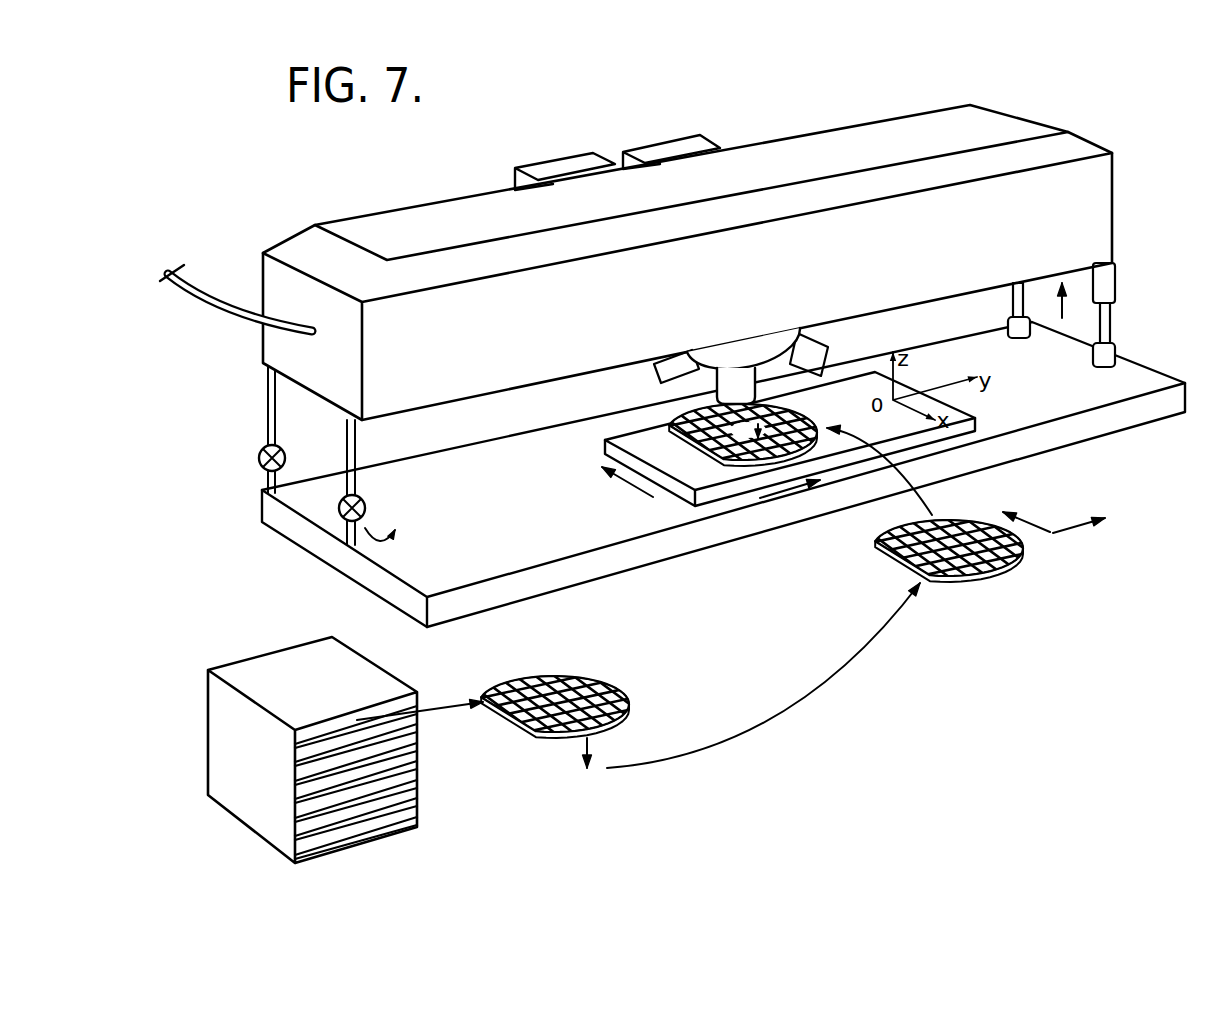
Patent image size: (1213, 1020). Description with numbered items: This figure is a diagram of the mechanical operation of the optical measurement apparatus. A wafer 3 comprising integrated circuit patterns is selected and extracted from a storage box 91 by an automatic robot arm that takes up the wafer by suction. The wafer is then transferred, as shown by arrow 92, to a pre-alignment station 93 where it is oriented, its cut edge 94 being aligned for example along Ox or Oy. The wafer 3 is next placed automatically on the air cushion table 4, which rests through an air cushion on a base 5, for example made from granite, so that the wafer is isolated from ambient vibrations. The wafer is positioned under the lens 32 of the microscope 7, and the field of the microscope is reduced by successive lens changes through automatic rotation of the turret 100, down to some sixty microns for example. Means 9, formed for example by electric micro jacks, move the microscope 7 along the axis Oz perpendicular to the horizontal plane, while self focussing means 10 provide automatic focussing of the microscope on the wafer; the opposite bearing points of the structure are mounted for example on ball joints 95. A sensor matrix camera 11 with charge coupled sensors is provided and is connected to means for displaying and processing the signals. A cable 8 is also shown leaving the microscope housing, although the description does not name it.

The wafer 3 is at (953, 578).
The table 4 is at (720, 495).
The base 5 is at (525, 593).
The microscope 7 is at (885, 146).
The cable 8 is at (198, 293).
The means for moving microscope 9 is at (1103, 280).
The self focussing means 10 is at (555, 168).
The sensor matrix camera 11 is at (687, 148).
The lens 32 is at (735, 388).
The storage box 91 is at (225, 722).
The transfer arrow 92 is at (820, 685).
The pre-alignment station 93 is at (1012, 620).
The cut edge 94 is at (895, 556).
The ball joints 95 is at (340, 508).
The turret 100 is at (753, 353).